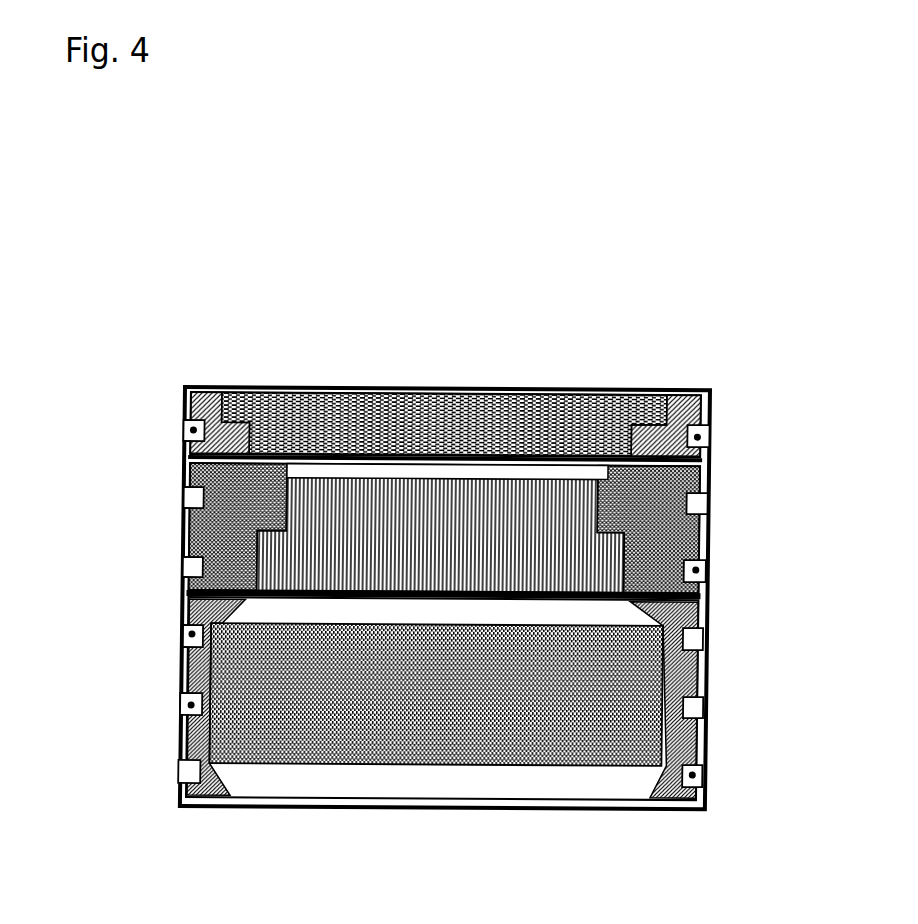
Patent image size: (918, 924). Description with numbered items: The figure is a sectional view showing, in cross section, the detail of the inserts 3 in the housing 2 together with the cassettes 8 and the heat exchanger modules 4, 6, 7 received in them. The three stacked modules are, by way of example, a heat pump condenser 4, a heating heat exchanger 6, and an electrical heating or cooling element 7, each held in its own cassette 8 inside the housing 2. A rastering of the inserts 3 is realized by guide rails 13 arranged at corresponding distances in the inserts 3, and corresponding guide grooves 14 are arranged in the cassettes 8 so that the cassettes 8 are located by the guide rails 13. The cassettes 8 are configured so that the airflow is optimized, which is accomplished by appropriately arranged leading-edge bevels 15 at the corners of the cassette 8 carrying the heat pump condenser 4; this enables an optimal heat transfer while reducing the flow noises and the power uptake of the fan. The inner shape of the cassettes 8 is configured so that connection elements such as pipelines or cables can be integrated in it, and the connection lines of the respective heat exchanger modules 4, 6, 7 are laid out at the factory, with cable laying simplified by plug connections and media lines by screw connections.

The housing 2 is at (172, 365).
The insert 3 is at (508, 548).
The heat pump condenser 4 is at (345, 708).
The heating heat exchanger 6 is at (413, 555).
The electrical heating or cooling element 7 is at (460, 407).
The cassette 8 is at (688, 408).
The guide rail 13 is at (447, 601).
The guide groove 14 is at (190, 428).
The leading-edge bevel 15 is at (230, 611).